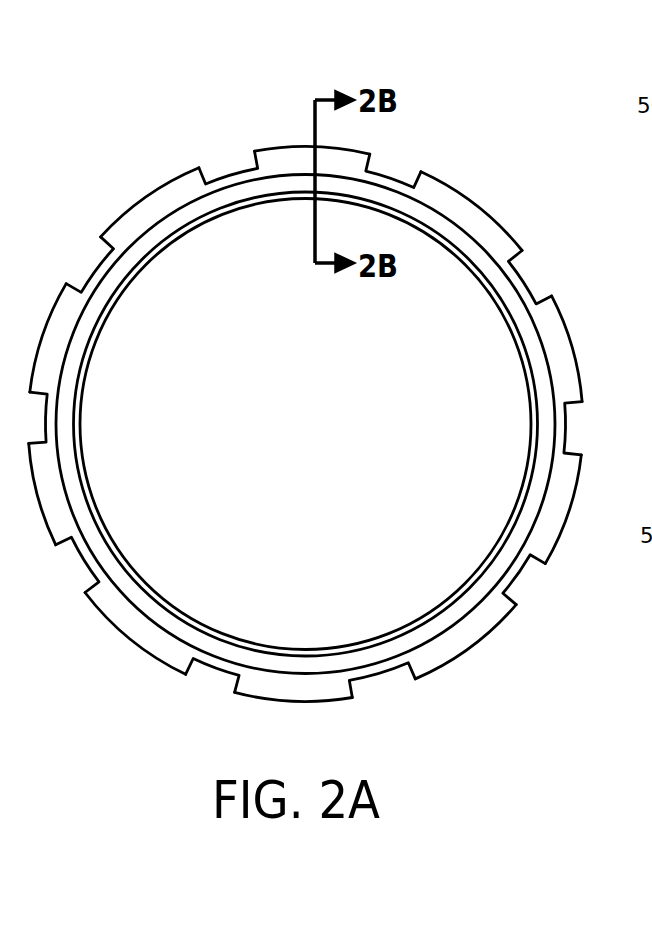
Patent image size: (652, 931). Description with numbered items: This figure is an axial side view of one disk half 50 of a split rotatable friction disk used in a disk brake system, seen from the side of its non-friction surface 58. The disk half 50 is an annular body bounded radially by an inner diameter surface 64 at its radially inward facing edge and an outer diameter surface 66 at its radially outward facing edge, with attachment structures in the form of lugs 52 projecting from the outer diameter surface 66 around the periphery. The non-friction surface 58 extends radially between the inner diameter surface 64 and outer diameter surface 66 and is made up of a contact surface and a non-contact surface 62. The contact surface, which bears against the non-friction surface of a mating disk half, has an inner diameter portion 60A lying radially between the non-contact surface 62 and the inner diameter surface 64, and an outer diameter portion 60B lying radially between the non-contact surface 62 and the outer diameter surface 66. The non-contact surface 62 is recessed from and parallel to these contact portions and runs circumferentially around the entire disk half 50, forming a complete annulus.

The disk half 50 is at (434, 161).
The lug 52 is at (300, 148).
The non-friction surface 58 is at (489, 285).
The inner diameter portion 60A is at (527, 419).
The outer diameter portion 60B is at (563, 420).
The non-contact surface 62 is at (547, 437).
The inner diameter surface 64 is at (247, 207).
The outer diameter surface 66 is at (227, 172).